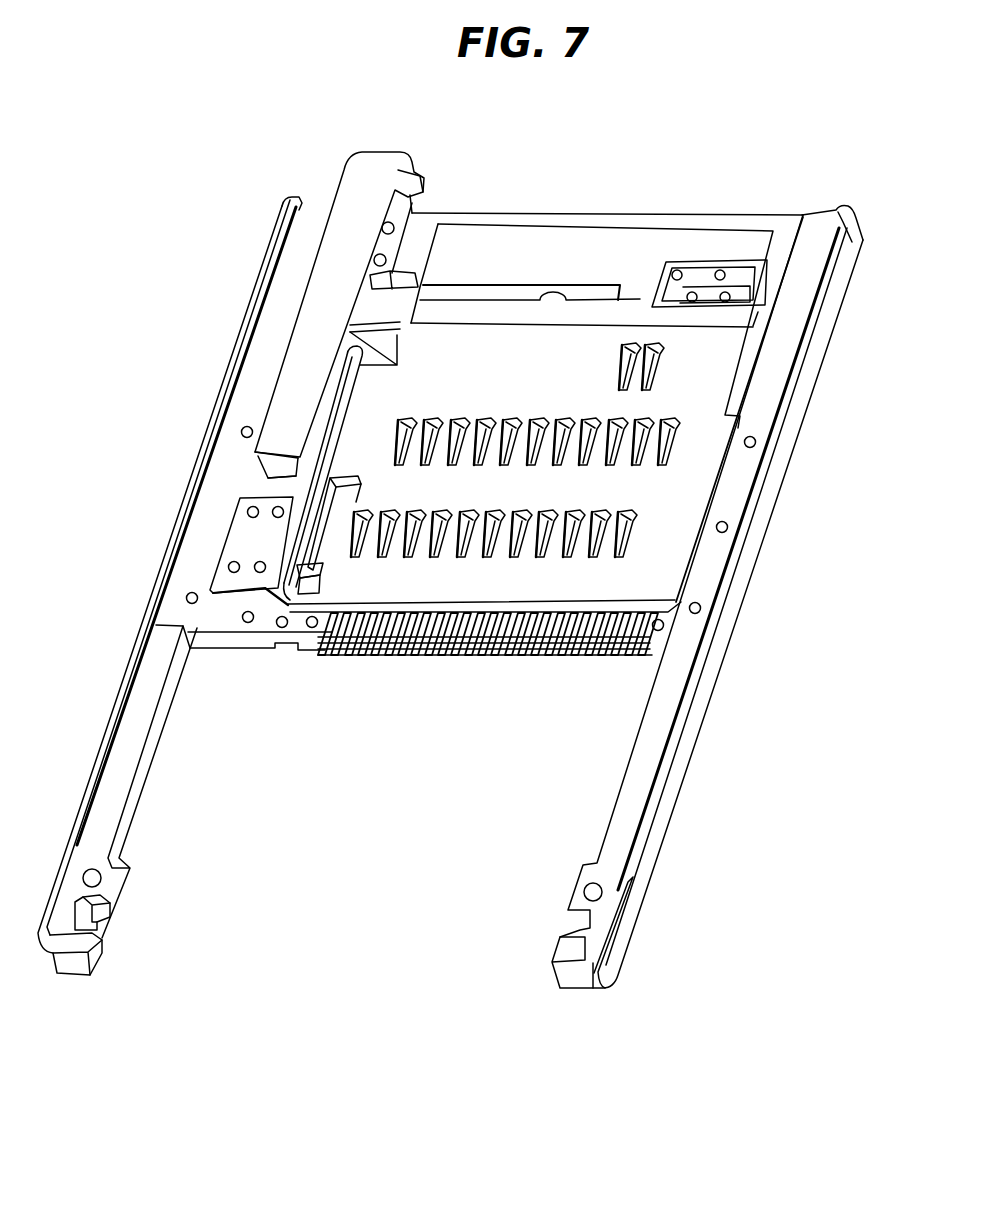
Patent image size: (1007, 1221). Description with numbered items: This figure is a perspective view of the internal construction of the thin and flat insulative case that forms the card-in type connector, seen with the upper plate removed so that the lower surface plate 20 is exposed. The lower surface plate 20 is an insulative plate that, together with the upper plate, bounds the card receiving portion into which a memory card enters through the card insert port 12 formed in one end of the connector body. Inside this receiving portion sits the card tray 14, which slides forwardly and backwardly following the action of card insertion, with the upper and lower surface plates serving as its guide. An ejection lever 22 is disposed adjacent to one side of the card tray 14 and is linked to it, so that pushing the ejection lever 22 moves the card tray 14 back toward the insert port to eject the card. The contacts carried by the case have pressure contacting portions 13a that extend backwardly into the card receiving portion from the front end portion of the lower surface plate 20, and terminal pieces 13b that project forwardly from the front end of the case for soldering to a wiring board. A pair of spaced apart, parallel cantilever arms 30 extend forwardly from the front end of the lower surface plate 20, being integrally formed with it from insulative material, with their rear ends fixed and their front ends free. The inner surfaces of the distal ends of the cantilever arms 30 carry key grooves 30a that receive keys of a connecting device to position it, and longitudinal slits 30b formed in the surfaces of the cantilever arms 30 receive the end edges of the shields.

The card insert port 12 is at (530, 226).
The pressure contacting portions 13a is at (677, 452).
The terminal pieces 13b is at (468, 672).
The card tray 14 is at (580, 333).
The lower surface plate 20 is at (263, 355).
The ejection lever 22 is at (384, 160).
The cantilever arms 30 is at (132, 737).
The key grooves 30a is at (98, 925).
The slits 30b is at (150, 640).